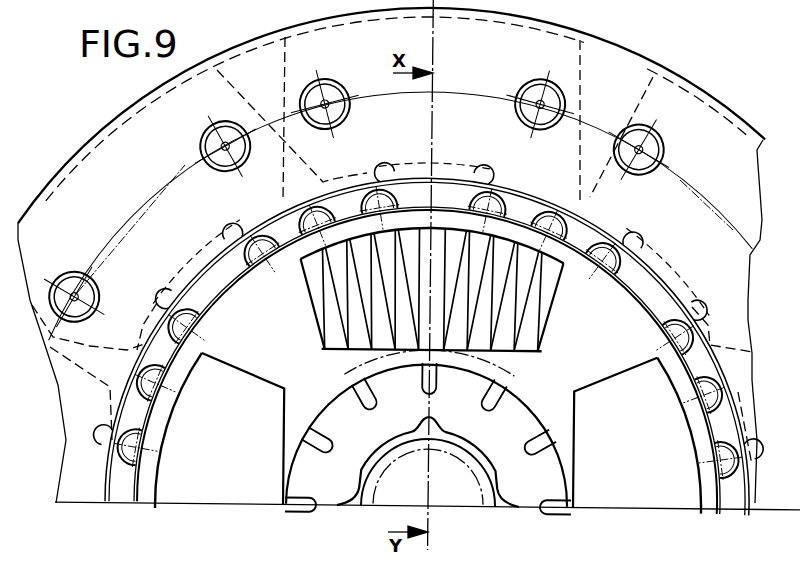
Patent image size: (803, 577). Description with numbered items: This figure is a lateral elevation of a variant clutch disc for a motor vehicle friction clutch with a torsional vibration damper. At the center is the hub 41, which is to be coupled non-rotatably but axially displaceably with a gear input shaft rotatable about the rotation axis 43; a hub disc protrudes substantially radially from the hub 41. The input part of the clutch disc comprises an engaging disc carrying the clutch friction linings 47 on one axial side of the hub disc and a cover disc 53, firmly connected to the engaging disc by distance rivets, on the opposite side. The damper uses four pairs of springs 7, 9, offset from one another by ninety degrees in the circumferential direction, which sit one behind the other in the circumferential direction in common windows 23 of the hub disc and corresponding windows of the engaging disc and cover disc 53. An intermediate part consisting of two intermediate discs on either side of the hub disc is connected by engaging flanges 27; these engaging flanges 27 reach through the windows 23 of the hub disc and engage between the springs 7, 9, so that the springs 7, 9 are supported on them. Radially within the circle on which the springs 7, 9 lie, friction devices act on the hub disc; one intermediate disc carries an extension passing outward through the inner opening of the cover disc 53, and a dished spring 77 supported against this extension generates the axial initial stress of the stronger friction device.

The spring 7 is at (363, 305).
The spring 9 is at (510, 242).
The window 23 is at (546, 340).
The engaging flange 27 is at (418, 348).
The hub 41 is at (487, 477).
The rotation axis 43 is at (423, 508).
The clutch friction linings 47 is at (692, 117).
The cover disc 53 is at (597, 332).
The dished spring 77 is at (322, 468).